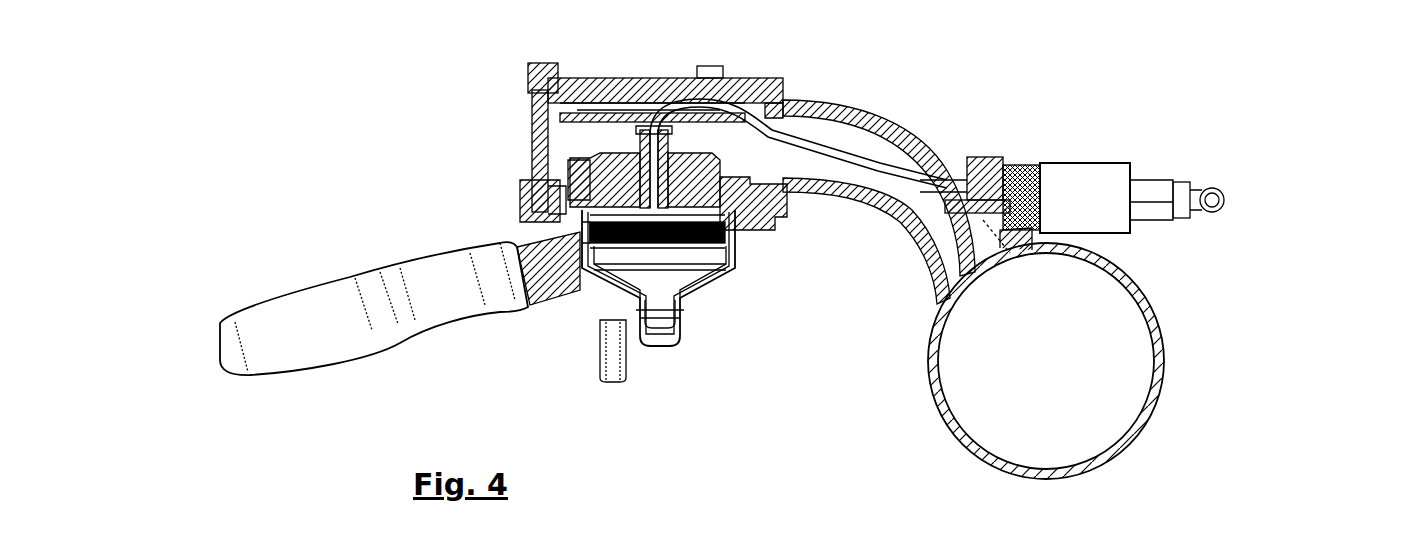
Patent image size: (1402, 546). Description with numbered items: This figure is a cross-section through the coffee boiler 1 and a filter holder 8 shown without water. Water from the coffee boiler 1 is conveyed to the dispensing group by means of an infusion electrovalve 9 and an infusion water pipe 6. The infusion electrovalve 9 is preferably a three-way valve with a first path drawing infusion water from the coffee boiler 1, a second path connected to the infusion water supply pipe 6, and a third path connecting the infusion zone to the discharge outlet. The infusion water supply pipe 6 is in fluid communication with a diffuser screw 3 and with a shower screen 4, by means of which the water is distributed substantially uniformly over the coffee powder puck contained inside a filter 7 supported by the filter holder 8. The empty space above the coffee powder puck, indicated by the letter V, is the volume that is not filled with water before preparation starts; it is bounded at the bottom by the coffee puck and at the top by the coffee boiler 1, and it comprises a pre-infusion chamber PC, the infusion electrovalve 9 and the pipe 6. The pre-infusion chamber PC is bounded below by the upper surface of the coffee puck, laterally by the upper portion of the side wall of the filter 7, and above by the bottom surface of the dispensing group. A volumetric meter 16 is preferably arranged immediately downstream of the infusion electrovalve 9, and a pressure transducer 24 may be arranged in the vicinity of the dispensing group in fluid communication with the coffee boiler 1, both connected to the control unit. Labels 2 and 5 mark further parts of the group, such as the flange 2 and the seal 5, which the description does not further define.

The coffee boiler 1 is at (1166, 366).
The flange 2 is at (767, 214).
The diffuser screw 3 is at (678, 243).
The shower screen 4 is at (734, 253).
The seal 5 is at (578, 203).
The infusion water pipe 6 is at (935, 183).
The filter 7 is at (604, 247).
The filter holder 8 is at (297, 316).
The infusion electrovalve 9 is at (1116, 173).
The volumetric meter 16 is at (1018, 150).
The pressure transducer 24 is at (1006, 150).
The empty space above the coffee powder puck V is at (624, 184).
The pressure chamber PC is at (590, 230).